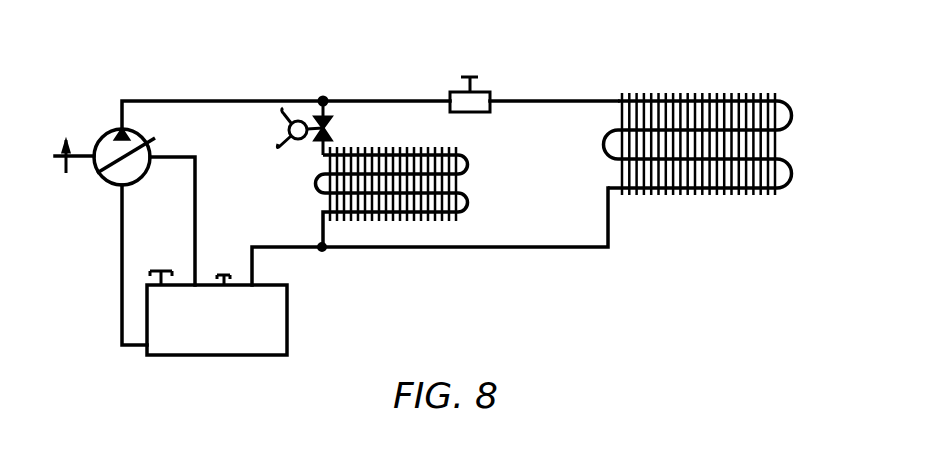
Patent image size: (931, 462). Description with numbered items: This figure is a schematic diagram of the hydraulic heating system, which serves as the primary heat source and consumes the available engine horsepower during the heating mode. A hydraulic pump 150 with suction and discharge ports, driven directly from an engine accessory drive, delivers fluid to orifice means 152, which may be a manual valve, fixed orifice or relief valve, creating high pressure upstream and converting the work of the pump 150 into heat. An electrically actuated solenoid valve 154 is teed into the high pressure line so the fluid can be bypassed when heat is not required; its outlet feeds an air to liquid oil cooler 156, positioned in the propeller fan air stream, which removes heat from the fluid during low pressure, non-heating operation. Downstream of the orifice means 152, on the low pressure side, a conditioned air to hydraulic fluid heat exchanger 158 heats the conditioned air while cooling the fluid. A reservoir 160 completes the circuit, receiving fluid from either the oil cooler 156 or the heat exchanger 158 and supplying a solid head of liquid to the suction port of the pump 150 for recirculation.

The hydraulic pump 150 is at (143, 134).
The orifice means 152 is at (549, 52).
The solenoid valve 154 is at (336, 68).
The oil cooler 156 is at (462, 193).
The heat exchanger 158 is at (776, 161).
The reservoir 160 is at (287, 307).